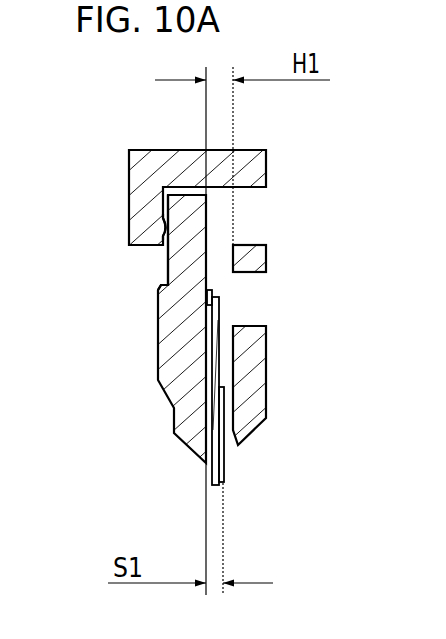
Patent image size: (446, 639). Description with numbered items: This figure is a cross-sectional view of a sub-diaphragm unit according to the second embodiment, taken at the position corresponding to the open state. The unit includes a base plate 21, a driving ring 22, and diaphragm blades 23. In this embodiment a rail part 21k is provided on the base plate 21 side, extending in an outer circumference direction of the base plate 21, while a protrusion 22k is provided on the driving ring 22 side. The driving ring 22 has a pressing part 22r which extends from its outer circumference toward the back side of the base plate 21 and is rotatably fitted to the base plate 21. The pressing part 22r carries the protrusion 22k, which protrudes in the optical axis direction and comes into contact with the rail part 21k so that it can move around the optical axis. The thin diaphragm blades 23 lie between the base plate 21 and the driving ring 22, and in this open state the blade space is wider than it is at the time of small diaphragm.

The base plate 21 is at (158, 323).
The rail part 21k is at (168, 267).
The driving ring 22 is at (267, 375).
The pressing part 22r is at (153, 148).
The protrusion 22k is at (167, 229).
The diaphragm blades 23 is at (223, 468).